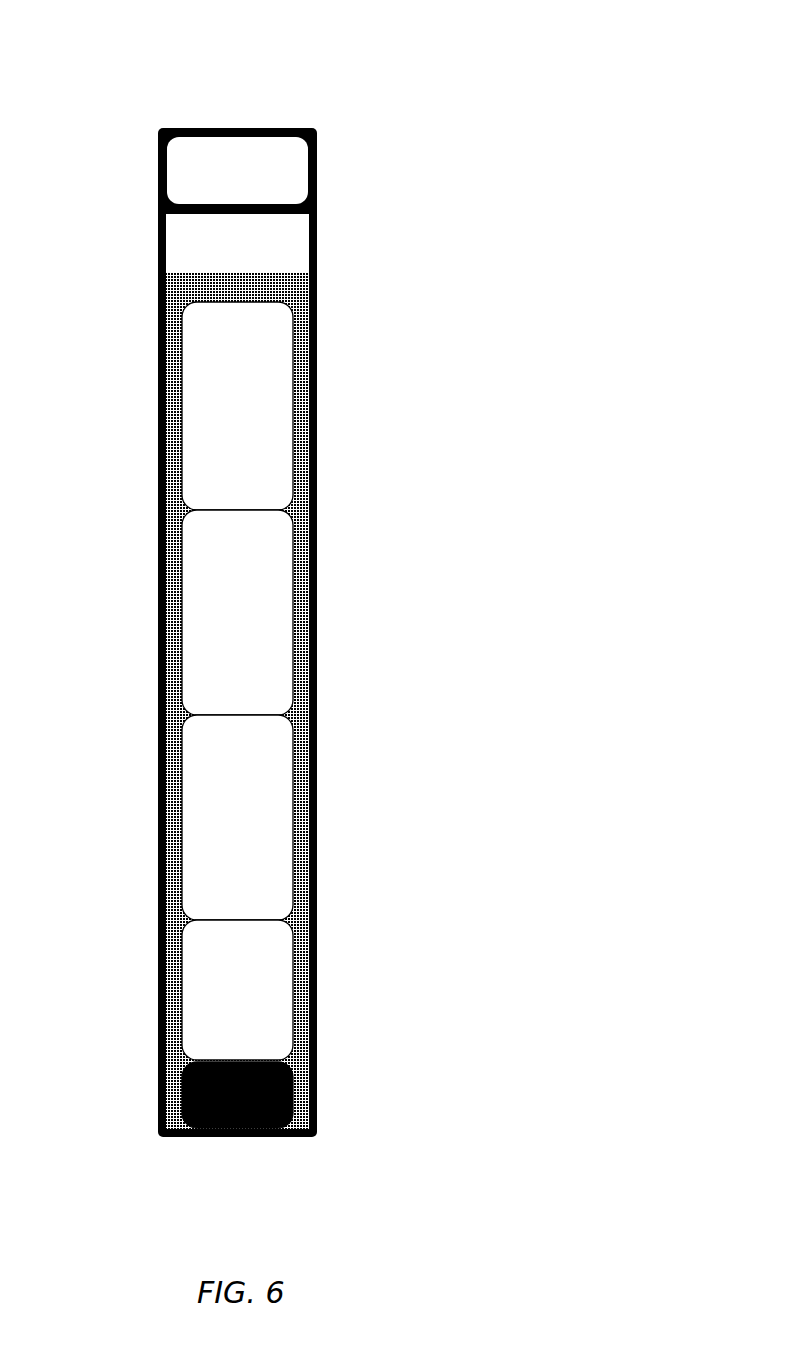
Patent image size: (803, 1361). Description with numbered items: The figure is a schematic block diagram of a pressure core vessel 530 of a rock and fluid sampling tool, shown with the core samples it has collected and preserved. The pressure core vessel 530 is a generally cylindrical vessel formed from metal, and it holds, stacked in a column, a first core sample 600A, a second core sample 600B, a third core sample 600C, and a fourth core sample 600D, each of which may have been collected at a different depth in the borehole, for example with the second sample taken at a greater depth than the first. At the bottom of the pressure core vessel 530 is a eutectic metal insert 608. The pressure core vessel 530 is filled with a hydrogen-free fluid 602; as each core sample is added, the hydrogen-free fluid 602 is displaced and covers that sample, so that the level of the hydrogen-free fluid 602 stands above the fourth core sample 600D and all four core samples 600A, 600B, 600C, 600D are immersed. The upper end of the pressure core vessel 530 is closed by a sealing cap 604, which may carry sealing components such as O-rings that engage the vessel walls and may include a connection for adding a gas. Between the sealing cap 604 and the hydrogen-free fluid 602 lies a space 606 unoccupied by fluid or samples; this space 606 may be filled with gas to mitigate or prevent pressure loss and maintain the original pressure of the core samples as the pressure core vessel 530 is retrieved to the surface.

The pressure core vessel 530 is at (447, 50).
The hydrogen-free fluid 602 is at (180, 287).
The sealing cap 604 is at (292, 178).
The space 606 is at (275, 246).
The first core sample 600A is at (275, 961).
The second core sample 600B is at (275, 750).
The third core sample 600C is at (275, 555).
The fourth core sample 600D is at (275, 340).
The eutectic metal insert 608 is at (293, 1085).